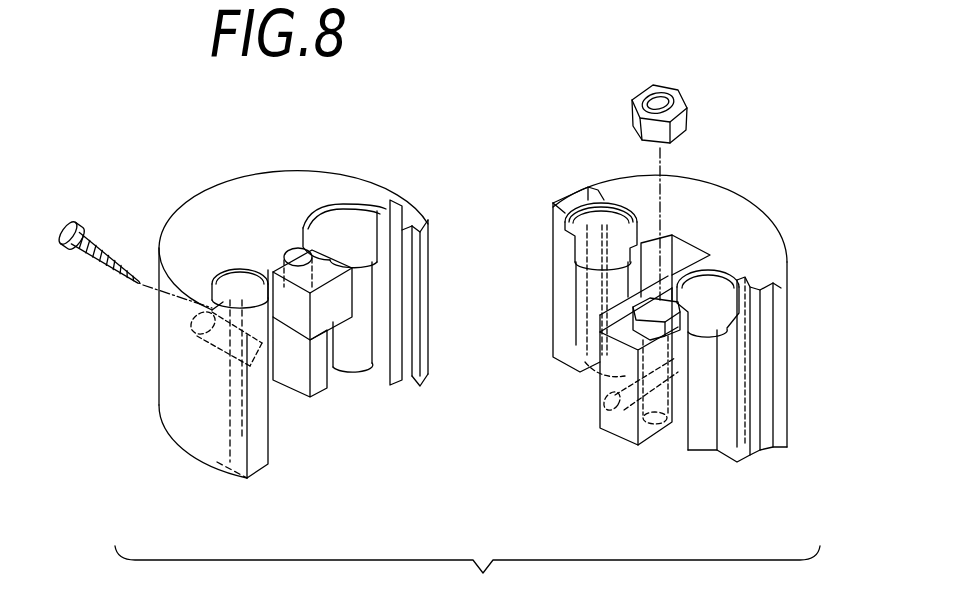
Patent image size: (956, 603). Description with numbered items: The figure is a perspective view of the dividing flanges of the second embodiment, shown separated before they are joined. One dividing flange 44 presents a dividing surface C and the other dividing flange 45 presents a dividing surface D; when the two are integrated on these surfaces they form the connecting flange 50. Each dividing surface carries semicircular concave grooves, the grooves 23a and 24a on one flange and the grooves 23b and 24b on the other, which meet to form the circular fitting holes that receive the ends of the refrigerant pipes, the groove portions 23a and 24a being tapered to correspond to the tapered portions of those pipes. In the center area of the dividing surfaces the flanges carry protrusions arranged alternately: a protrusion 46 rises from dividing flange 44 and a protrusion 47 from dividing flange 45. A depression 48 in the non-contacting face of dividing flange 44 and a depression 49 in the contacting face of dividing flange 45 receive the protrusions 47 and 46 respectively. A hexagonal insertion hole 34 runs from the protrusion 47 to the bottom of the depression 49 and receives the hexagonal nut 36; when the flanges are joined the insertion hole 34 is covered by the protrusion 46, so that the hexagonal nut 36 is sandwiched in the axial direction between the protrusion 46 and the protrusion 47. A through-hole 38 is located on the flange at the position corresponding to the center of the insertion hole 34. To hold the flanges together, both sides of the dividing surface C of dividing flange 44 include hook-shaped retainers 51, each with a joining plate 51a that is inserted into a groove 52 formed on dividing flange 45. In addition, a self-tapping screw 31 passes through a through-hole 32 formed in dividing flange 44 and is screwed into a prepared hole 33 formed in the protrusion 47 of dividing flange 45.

The self-tapping screw 31 is at (70, 220).
The through-hole 32 is at (195, 336).
The semicircular concave groove 23a is at (240, 287).
The through-hole 38 is at (291, 250).
The dividing flange 44 is at (283, 170).
The semicircular concave groove 24a is at (347, 224).
The protrusion 46 is at (338, 366).
The depression 48 is at (300, 398).
The hook-shaped retainer 51 is at (420, 218).
The joining plate 51a is at (418, 240).
The dividing surface C is at (378, 365).
The groove 52 is at (590, 187).
The hexagonal nut 36 is at (688, 118).
The dividing flange 45 is at (742, 194).
The connecting flange 50 is at (799, 250).
The semicircular concave groove 24b is at (606, 228).
The depression 49 is at (688, 250).
The hexagonal insertion hole 34 is at (641, 325).
The prepared hole 33 is at (612, 410).
The protrusion 47 is at (626, 445).
The semicircular concave groove 23b is at (706, 432).
The dividing surface D is at (720, 458).